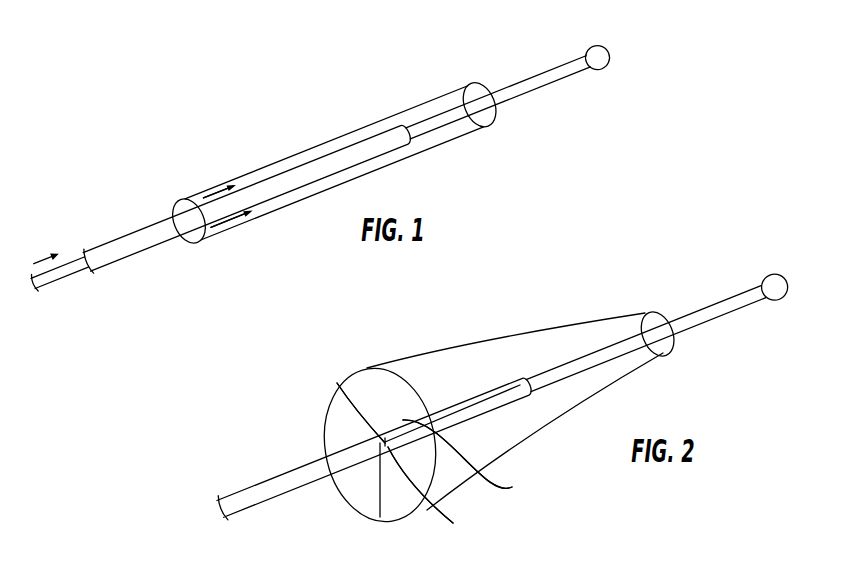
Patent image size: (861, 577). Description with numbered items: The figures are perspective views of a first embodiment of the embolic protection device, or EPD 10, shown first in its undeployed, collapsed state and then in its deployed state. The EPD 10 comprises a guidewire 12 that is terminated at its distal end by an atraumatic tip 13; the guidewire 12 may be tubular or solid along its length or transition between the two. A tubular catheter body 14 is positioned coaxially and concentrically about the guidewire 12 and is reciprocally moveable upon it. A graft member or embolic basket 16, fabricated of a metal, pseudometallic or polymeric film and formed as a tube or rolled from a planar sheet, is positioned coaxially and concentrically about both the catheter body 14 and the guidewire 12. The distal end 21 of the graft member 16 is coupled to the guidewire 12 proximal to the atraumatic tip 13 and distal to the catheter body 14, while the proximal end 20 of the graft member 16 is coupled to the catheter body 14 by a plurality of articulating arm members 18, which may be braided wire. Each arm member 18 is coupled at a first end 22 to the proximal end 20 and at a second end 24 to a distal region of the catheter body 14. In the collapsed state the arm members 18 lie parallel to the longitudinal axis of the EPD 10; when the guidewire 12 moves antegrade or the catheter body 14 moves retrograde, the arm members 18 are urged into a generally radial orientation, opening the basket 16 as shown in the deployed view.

In FIG. 1, the embolic protection device 10 is at (220, 88).
In FIG. 1, the guidewire 12 is at (543, 86).
In FIG. 2, the guidewire 12 is at (721, 316).
In FIG. 1, the atraumatic tip 13 is at (601, 47).
In FIG. 2, the atraumatic tip 13 is at (772, 279).
In FIG. 1, the tubular catheter body 14 is at (108, 243).
In FIG. 2, the tubular catheter body 14 is at (288, 472).
In FIG. 1, the graft member 16 is at (392, 114).
In FIG. 2, the graft member 16 is at (432, 353).
In FIG. 1, the articulating arm members 18 is at (212, 192).
In FIG. 2, the articulating arm members 18 is at (347, 407).
In FIG. 1, the proximal end 20 is at (176, 214).
In FIG. 2, the proximal end 20 is at (325, 428).
In FIG. 1, the distal end 21 is at (474, 82).
In FIG. 2, the distal end 21 is at (653, 311).
In FIG. 2, the first end 22 is at (336, 382).
In FIG. 1, the second end 24 is at (266, 192).
In FIG. 2, the second end 24 is at (444, 518).